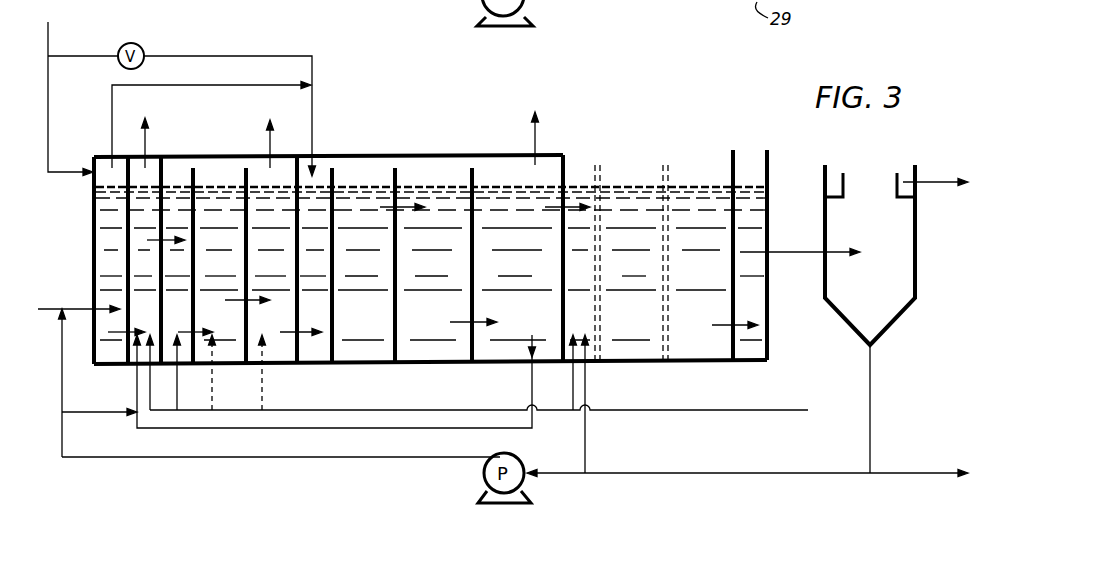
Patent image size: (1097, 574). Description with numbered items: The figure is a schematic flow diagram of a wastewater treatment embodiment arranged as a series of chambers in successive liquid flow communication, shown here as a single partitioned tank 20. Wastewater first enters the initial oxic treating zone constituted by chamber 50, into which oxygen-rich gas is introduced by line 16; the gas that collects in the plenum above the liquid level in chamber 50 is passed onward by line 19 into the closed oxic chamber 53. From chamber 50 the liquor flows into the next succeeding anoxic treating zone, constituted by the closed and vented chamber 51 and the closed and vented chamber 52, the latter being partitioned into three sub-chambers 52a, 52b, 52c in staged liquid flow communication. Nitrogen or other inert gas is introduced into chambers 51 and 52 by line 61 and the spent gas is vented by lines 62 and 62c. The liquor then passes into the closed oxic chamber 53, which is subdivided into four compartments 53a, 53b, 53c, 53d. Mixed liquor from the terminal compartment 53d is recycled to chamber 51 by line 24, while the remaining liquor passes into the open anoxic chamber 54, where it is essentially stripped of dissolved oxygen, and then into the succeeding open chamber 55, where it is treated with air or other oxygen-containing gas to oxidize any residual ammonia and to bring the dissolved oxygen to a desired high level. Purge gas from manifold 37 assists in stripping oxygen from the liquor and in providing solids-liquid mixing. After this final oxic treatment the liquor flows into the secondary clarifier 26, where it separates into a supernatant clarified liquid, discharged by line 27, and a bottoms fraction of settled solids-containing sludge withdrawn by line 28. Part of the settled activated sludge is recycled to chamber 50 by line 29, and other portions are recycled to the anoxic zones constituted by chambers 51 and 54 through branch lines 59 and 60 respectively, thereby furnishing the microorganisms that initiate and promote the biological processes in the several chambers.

The oxygen-rich gas line 16 is at (48, 97).
The gas transfer line 19 is at (228, 77).
The multi-stage treatment tank 20 is at (690, 180).
The recycle line 24 is at (408, 428).
The clarifier 26 is at (827, 255).
The clarified liquid discharge line 27 is at (930, 180).
The bottoms withdrawal line 28 is at (870, 377).
The sludge recycle line 29 is at (235, 457).
The purge gas manifold 37 is at (540, 130).
The initial oxic treating chamber 50 is at (108, 260).
The closed and vented anoxic chamber 51 is at (142, 260).
The closed and vented anoxic chamber 52 is at (218, 165).
The first compartment of chamber 52 52a is at (177, 260).
The second compartment of chamber 52 52b is at (215, 265).
The third compartment of chamber 52 52c is at (268, 265).
The closed oxic treating chamber 53 is at (430, 165).
The first compartment of chamber 53 53a is at (312, 260).
The second compartment of chamber 53 53b is at (360, 265).
The third compartment of chamber 53 53c is at (428, 265).
The terminal compartment of chamber 53 53d is at (512, 265).
The open anoxic chamber 54 is at (647, 262).
The open oxic chamber 55 is at (750, 255).
The branch sludge recycle line 59 is at (88, 413).
The branch sludge recycle line 60 is at (585, 447).
The inert gas line 61 is at (378, 410).
The spent gas vent line 62 is at (145, 140).
The spent gas vent line 62c is at (270, 132).